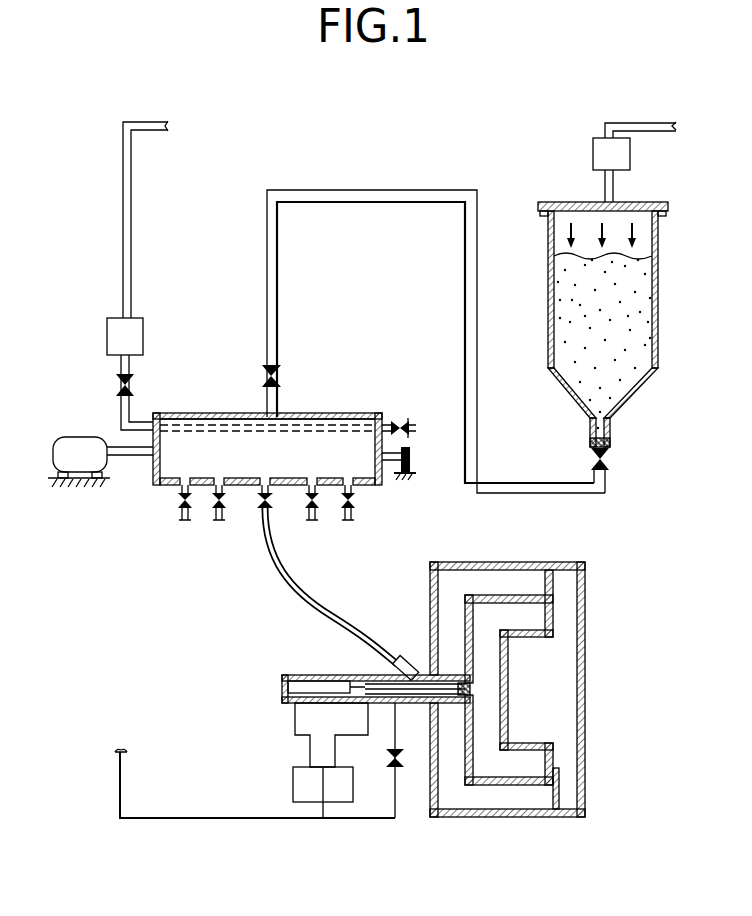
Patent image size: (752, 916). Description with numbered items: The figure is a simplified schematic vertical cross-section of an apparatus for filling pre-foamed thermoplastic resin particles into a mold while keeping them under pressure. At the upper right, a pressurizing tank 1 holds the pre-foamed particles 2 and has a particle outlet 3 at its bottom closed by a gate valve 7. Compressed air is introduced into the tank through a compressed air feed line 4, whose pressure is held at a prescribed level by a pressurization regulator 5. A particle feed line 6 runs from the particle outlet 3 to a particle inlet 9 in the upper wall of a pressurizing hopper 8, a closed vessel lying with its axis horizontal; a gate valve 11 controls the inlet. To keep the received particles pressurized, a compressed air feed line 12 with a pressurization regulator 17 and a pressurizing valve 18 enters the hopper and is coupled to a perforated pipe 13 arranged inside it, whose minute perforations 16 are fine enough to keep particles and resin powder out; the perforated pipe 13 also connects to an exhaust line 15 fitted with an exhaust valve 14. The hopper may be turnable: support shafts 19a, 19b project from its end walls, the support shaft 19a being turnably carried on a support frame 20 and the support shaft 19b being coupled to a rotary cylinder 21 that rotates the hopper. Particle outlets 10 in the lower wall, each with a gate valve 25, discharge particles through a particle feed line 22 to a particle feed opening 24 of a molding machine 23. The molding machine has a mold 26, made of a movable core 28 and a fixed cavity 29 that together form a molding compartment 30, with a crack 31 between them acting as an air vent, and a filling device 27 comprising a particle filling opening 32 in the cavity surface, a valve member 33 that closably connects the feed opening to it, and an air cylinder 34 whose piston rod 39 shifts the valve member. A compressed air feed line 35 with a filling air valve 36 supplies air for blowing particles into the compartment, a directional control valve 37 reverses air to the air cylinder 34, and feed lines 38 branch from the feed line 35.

The pressurizing tank 1 is at (658, 283).
The pre-foamed particles 2 is at (632, 340).
The particle outlet 3 is at (612, 433).
The compressed air feed line 4 is at (658, 125).
The pressurization regulator 5 is at (630, 156).
The particle feed line 6 is at (408, 190).
The gate valve 7 is at (610, 458).
The pressurizing hopper 8 is at (352, 412).
The particle inlet 9 is at (283, 412).
The particle outlets 10 is at (182, 490).
The gate valve 11 is at (285, 378).
The compressed air feed line 12 is at (131, 208).
The perforated pipe 13 is at (196, 413).
The exhaust valve 14 is at (396, 422).
The exhaust line 15 is at (408, 428).
The minute perforations 16 is at (240, 425).
The pressurization regulator 17 is at (107, 338).
The pressurizing valve 18 is at (117, 390).
The support shaft 19a is at (392, 466).
The support shaft 19b is at (124, 456).
The support frame 20 is at (410, 468).
The rotary cylinder 21 is at (80, 442).
The particle feed line 22 is at (305, 590).
The molding machine 23 is at (588, 680).
The particle feed opening 24 is at (404, 660).
The gate valve 25 is at (183, 515).
The mold 26 is at (603, 573).
The filling device 27 is at (320, 675).
The movable core 28 is at (566, 565).
The cavity 29 is at (520, 565).
The molding compartment 30 is at (490, 760).
The crack 31 is at (548, 818).
The particle filling opening 32 is at (470, 648).
The valve member 33 is at (462, 700).
The air cylinder 34 is at (288, 687).
The compressed air feed line 35 is at (350, 818).
The filling air valve 36 is at (404, 761).
The directional control valve 37 is at (293, 783).
The feed lines 38 is at (295, 722).
The piston rod 39 is at (386, 676).